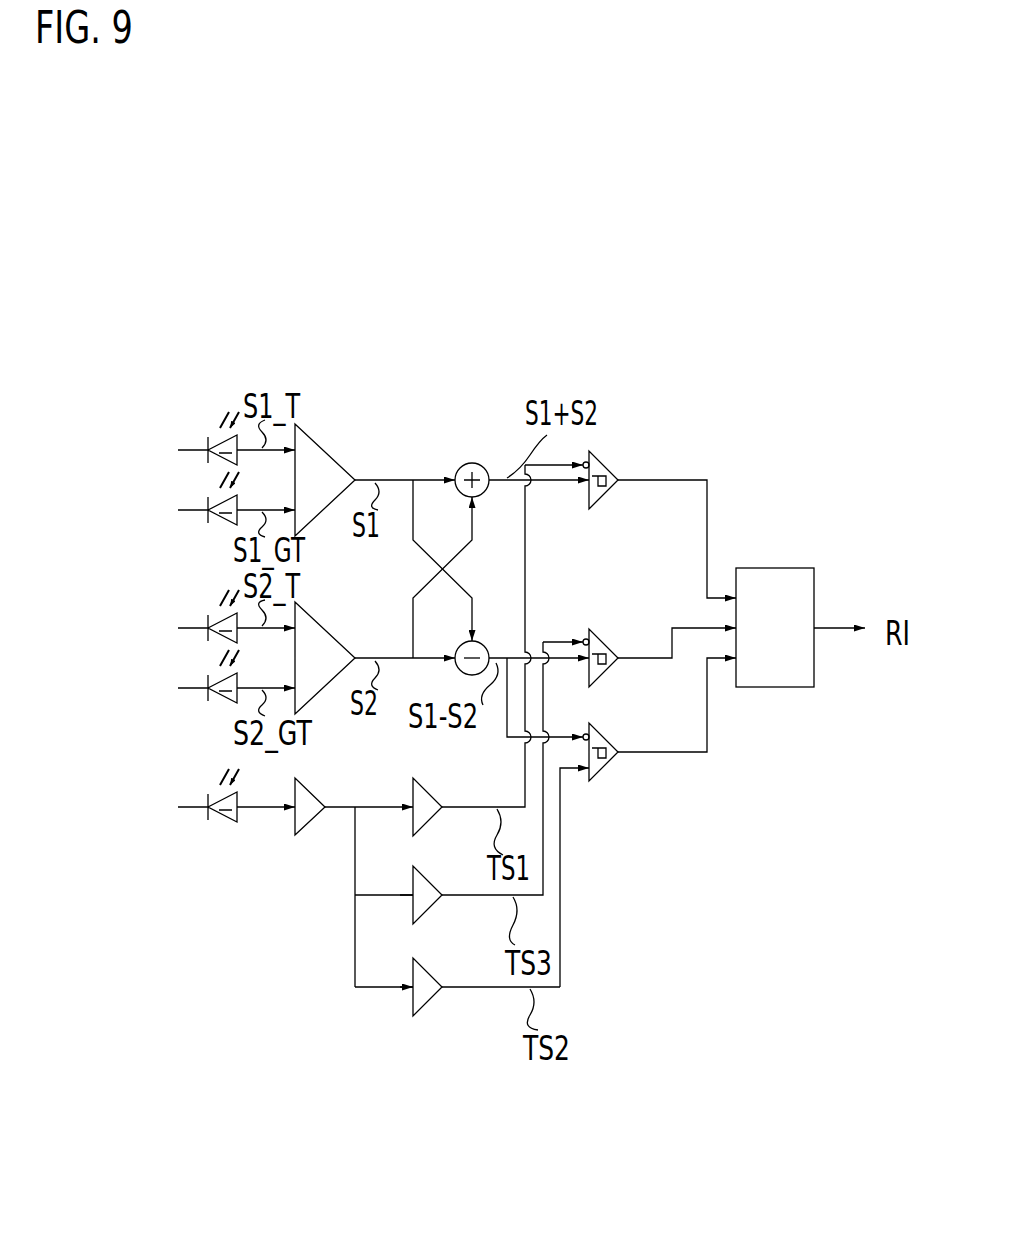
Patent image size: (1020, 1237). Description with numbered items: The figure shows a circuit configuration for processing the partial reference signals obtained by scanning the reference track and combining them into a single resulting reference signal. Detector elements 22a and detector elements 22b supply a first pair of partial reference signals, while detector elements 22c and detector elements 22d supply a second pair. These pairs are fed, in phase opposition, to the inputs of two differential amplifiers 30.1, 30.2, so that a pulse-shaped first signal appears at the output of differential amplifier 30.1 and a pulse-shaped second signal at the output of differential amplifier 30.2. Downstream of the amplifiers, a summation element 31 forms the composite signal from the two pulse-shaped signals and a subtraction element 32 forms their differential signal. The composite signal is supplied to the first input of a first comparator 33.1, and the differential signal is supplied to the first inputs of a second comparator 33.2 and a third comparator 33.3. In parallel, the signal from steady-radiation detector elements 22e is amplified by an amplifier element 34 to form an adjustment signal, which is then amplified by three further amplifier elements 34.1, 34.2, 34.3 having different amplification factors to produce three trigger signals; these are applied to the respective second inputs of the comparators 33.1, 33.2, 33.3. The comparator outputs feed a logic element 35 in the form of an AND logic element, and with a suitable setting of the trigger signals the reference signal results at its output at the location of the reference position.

The detector elements 22a is at (212, 462).
The detector elements 22b is at (212, 522).
The detector elements 22c is at (212, 642).
The detector elements 22d is at (212, 702).
The steady-radiation detector elements 22e is at (212, 815).
The differential amplifier 30.1 is at (317, 462).
The differential amplifier 30.2 is at (322, 642).
The summation element 31 is at (458, 472).
The subtraction element 32 is at (475, 652).
The first comparator 33.1 is at (607, 460).
The second comparator 33.2 is at (600, 640).
The third comparator 33.3 is at (605, 767).
The amplifier element 34 is at (313, 815).
The amplifier element 34.1 is at (440, 778).
The amplifier element 34.2 is at (440, 866).
The amplifier element 34.3 is at (440, 958).
The logic element 35 is at (796, 664).